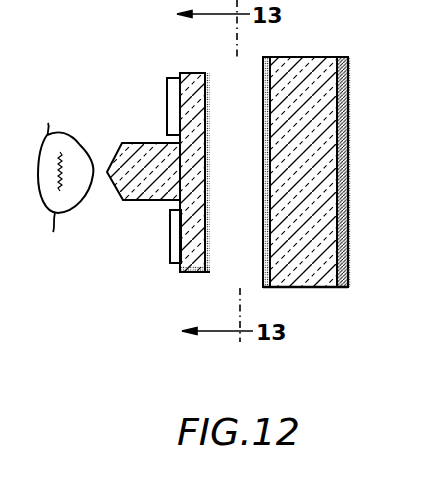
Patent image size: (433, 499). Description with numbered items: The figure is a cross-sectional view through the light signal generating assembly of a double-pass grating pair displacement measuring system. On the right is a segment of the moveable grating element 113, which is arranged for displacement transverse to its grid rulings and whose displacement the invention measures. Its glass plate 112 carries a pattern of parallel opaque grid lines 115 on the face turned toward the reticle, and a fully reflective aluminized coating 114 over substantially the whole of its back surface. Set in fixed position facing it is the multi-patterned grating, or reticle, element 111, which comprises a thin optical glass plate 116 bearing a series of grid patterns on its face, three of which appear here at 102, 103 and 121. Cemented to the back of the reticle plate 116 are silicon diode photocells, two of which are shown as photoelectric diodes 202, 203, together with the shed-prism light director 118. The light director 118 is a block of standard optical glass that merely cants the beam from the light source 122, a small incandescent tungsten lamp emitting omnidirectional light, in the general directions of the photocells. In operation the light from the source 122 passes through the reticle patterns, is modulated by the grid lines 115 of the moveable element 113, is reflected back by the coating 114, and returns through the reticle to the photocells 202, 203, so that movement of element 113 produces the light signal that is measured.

The grid pattern 102 is at (207, 97).
The grid pattern 103 is at (210, 235).
The multi-patterned grating element 111 is at (188, 70).
The glass plate 112 is at (303, 288).
The moveable grating element 113 is at (303, 53).
The aluminized coating 114 is at (348, 113).
The parallel lines 115 is at (265, 147).
The optical glass plate 116 is at (193, 273).
The light director 118 is at (138, 143).
The grid pattern 121 is at (210, 173).
The light source 122 is at (62, 133).
The photoelectric diode 202 is at (167, 84).
The photoelectric diode 203 is at (169, 218).